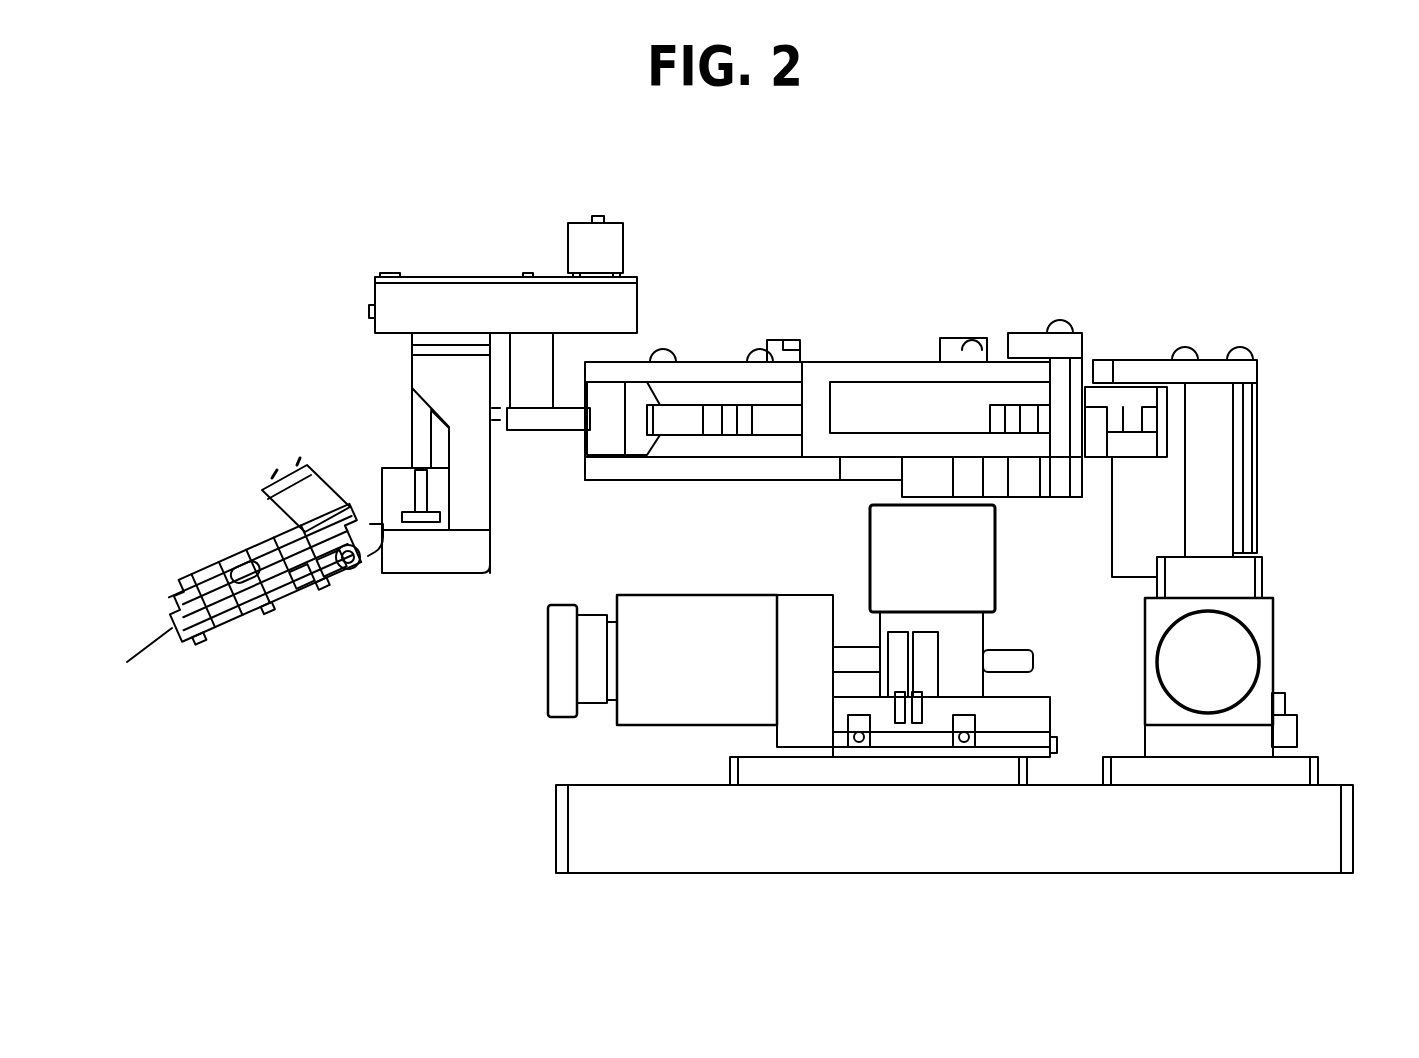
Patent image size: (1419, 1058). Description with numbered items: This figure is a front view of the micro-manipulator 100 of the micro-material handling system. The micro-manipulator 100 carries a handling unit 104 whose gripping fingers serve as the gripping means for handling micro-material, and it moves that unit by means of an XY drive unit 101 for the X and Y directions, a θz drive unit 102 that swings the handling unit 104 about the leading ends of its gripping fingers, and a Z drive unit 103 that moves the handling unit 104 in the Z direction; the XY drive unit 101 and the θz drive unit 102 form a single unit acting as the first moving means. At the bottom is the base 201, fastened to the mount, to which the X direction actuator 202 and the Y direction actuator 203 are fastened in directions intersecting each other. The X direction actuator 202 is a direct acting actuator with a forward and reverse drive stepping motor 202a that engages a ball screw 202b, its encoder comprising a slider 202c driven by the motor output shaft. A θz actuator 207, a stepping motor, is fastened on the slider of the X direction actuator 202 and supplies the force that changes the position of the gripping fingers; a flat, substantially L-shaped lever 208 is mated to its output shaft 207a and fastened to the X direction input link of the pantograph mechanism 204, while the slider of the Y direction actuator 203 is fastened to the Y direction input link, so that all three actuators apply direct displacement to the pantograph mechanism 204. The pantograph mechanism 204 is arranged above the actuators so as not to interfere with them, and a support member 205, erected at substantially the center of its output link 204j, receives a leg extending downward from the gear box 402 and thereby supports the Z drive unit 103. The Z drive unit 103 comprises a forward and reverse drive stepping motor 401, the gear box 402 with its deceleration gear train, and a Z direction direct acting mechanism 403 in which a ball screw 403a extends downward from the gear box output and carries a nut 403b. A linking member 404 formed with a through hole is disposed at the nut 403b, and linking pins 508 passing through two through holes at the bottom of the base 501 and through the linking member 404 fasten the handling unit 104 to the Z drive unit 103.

The micro-manipulator 100 is at (907, 182).
The XY drive unit 101 is at (1017, 303).
The θz drive unit 102 is at (1171, 462).
The Z drive unit 103 is at (330, 258).
The handling unit 104 is at (207, 522).
The base 201 is at (554, 842).
The X direction actuator 202 is at (588, 732).
The stepping motor 202a is at (722, 597).
The ball screw 202b is at (993, 672).
The slider 202c is at (985, 627).
The Y direction actuator 203 is at (1290, 650).
The pantograph mechanism 204 is at (730, 358).
The output link 204j is at (532, 432).
The support member 205 is at (557, 362).
The θz actuator 207 is at (1012, 530).
The output shaft 207a is at (908, 507).
The lever 208 is at (893, 484).
The stepping motor 401 is at (567, 247).
The gear box 402 is at (425, 272).
The Z direction direct acting mechanism 403 is at (412, 365).
The ball screw 403a is at (412, 426).
The nut 403b is at (440, 462).
The linking member 404 is at (373, 572).
The base 501 is at (193, 642).
The linking pins 508 is at (345, 570).